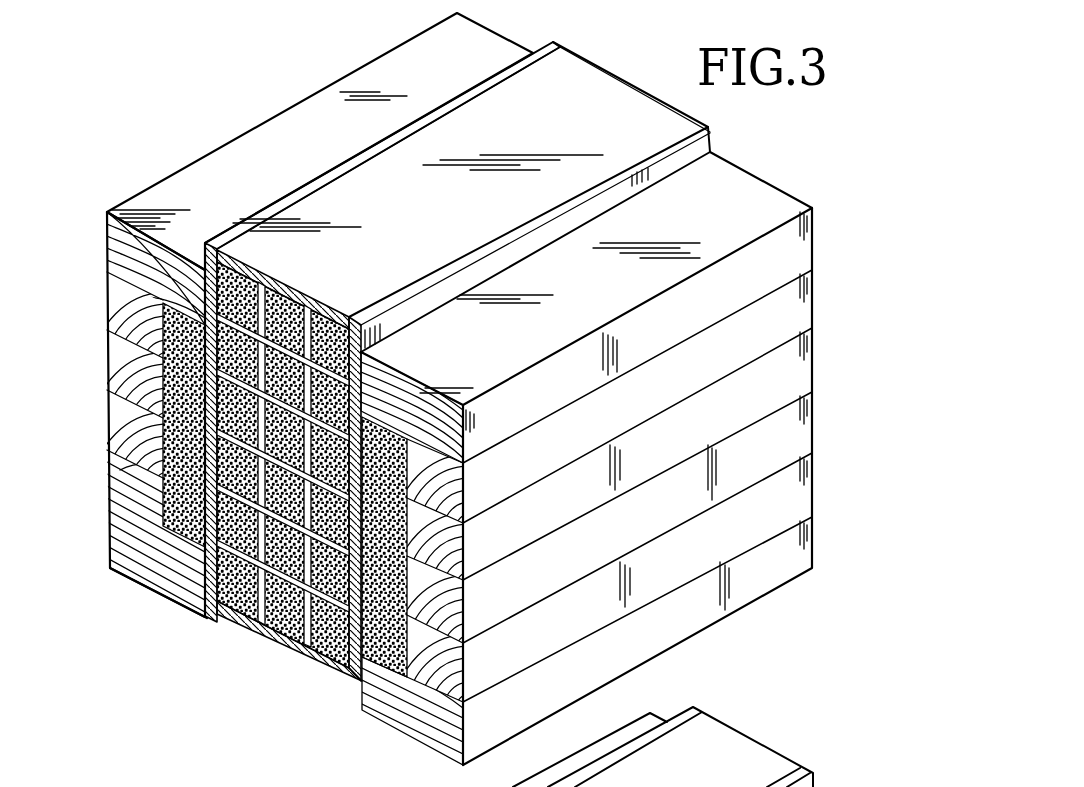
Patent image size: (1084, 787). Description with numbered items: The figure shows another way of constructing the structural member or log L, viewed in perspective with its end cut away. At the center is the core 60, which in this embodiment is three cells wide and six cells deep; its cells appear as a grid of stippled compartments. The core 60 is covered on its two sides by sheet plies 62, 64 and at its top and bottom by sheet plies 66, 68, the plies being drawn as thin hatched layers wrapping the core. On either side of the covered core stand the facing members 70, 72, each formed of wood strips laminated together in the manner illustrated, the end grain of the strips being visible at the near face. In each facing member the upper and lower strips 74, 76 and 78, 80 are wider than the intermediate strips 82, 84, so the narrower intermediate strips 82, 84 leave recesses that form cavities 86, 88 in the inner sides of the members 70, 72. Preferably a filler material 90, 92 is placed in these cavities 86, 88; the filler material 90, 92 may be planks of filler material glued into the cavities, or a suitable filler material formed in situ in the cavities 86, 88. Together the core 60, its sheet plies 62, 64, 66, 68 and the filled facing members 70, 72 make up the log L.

The core 60 is at (307, 672).
The sheet ply 62 is at (335, 173).
The sheet ply 64 is at (527, 233).
The sheet ply 66 is at (622, 78).
The sheet ply 68 is at (267, 633).
The facing member 70 is at (92, 390).
The facing member 72 is at (835, 372).
The upper strip 74 is at (175, 197).
The upper strip 76 is at (450, 320).
The lower strip 78 is at (167, 598).
The lower strip 80 is at (380, 717).
The intermediate strips 82 is at (125, 295).
The intermediate strips 84 is at (468, 492).
The cavity 86 is at (143, 572).
The cavity 88 is at (403, 607).
The filler material 90 is at (180, 435).
The filler material 92 is at (383, 460).
The log L is at (267, 662).